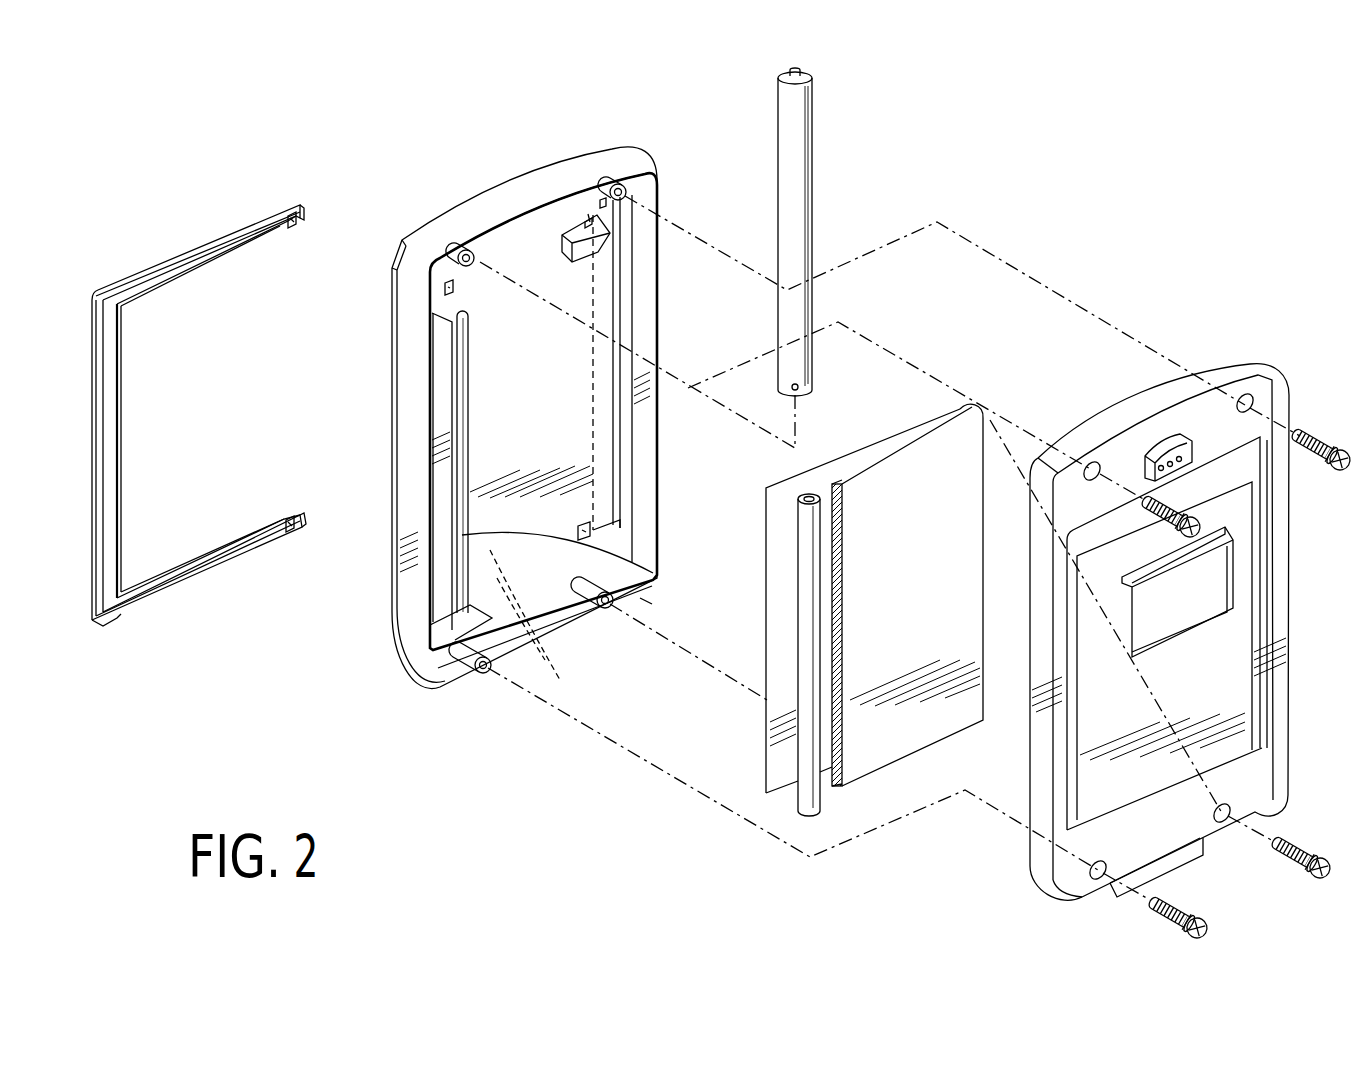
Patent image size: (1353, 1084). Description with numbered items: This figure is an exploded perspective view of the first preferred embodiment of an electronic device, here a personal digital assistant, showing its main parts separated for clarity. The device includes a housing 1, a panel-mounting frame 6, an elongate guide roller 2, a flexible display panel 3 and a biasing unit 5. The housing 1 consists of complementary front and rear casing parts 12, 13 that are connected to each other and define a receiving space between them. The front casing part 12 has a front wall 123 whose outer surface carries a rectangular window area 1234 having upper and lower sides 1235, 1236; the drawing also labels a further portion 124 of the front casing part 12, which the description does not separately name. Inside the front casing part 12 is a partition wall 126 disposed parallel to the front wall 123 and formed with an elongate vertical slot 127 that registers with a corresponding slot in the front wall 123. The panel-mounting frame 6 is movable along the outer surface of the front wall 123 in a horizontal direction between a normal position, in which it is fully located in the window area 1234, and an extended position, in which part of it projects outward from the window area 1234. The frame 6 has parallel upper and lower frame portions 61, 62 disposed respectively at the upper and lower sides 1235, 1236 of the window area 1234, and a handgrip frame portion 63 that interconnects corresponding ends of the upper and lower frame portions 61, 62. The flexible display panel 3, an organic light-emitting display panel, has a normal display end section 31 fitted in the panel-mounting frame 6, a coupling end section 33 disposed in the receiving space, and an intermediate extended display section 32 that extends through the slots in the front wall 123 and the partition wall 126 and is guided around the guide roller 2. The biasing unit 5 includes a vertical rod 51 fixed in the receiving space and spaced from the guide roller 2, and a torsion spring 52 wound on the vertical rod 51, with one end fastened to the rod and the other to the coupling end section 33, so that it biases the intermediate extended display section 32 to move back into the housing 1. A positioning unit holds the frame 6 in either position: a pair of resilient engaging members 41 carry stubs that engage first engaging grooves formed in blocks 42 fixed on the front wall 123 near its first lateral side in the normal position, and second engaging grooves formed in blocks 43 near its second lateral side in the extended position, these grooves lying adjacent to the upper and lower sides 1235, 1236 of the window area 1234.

The housing 1 is at (535, 838).
The guide roller 2 is at (790, 192).
The flexible display panel 3 is at (975, 388).
The biasing unit 5 is at (745, 557).
The panel-mounting frame 6 is at (130, 460).
The front casing part 12 is at (406, 692).
The rear casing part 13 is at (1025, 882).
The normal display end section 31 is at (845, 471).
The intermediate extended display section 32 is at (956, 518).
The coupling end section 33 is at (870, 622).
The resilient engaging member 41 is at (285, 230).
The block 42 is at (572, 172).
The block 43 is at (440, 283).
The vertical rod 51 is at (645, 602).
The torsion spring 52 is at (803, 625).
The upper frame portion 61 is at (178, 252).
The lower frame portion 62 is at (199, 558).
The handgrip frame portion 63 is at (100, 376).
The front wall 123 is at (400, 240).
The peripheral wall 124 is at (450, 240).
The partition wall 126 is at (502, 250).
The vertical slot 127 is at (612, 437).
The window area 1234 is at (512, 650).
The upper side 1235 is at (530, 258).
The lower side 1236 is at (570, 635).